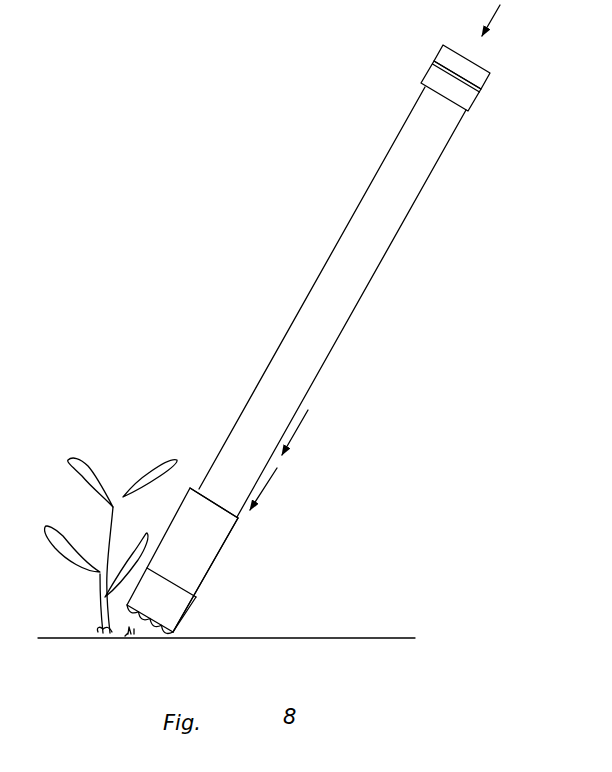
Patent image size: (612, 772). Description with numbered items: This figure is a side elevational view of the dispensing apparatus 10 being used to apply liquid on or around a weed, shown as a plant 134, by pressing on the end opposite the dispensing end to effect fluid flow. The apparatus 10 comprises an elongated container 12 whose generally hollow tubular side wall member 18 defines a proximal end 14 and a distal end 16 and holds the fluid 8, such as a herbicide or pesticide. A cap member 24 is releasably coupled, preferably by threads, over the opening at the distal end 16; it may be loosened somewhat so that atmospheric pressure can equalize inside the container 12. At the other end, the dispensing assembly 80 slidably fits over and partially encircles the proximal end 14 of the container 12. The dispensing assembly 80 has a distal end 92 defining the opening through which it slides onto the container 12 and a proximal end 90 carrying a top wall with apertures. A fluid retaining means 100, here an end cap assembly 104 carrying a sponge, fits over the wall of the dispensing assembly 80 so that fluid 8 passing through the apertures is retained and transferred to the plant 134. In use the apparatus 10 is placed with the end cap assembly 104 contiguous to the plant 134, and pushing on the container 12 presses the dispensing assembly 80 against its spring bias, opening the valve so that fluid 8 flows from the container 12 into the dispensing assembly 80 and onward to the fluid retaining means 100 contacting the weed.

The fluid 8 is at (129, 630).
The dispensing apparatus 10 is at (343, 342).
The elongated container 12 is at (380, 222).
The proximal end 14 is at (283, 482).
The distal end 16 is at (390, 100).
The side wall member 18 is at (348, 277).
The cap member 24 is at (460, 97).
The dispensing assembly 80 is at (197, 560).
The proximal end 90 is at (195, 597).
The distal end 92 is at (248, 525).
The fluid retaining means 100 is at (168, 633).
The end cap assembly 104 is at (182, 612).
The plant 134 is at (88, 483).